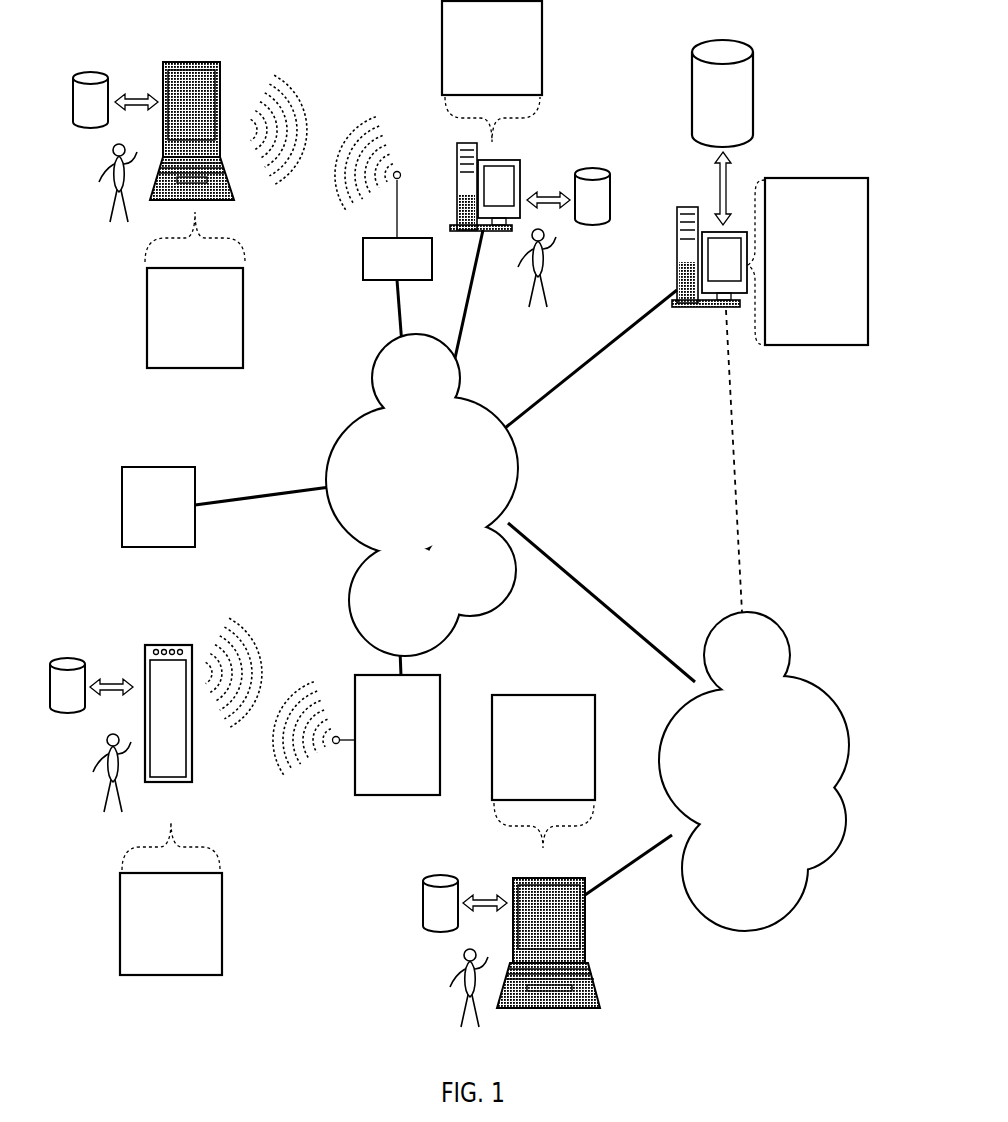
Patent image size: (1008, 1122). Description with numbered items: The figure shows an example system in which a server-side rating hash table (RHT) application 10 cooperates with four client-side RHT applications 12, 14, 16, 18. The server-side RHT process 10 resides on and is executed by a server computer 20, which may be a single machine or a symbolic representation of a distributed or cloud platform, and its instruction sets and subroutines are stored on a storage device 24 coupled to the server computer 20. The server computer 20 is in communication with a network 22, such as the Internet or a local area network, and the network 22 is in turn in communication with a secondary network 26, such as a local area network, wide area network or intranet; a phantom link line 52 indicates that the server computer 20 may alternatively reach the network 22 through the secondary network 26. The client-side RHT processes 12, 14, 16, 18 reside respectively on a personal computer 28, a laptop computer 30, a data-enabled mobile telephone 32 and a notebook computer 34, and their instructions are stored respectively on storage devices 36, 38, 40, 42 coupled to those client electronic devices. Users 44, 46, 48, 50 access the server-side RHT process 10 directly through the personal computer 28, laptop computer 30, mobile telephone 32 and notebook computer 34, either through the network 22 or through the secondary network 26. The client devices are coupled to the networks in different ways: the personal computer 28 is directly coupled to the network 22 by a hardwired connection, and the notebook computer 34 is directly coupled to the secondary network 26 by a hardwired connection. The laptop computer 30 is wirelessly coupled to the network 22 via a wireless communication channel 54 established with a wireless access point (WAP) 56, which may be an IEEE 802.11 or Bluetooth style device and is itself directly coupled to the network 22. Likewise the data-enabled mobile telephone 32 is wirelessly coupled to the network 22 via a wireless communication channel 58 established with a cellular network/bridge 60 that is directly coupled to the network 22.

The server-side rating hash table (RHT) application 10 is at (868, 225).
The client-side RHT application 12 is at (542, 70).
The client-side RHT application 14 is at (243, 299).
The client-side RHT application 16 is at (222, 893).
The client-side RHT application 18 is at (595, 760).
The server computer 20 is at (675, 238).
The network 22 is at (422, 495).
The storage device 24 is at (752, 65).
The secondary network 26 is at (754, 771).
The personal computer 28 is at (520, 178).
The laptop computer 30 is at (222, 90).
The data-enabled mobile telephone 32 is at (194, 718).
The notebook computer 34 is at (585, 935).
The storage device 36 is at (568, 196).
The storage device 38 is at (115, 100).
The storage device 40 is at (91, 685).
The storage device 42 is at (465, 903).
The user 44 is at (552, 246).
The user 46 is at (96, 173).
The user 48 is at (96, 757).
The user 50 is at (447, 980).
The phantom link line 52 is at (732, 442).
The wireless communication channel 54 is at (325, 110).
The wireless access point (WAP) 56 is at (363, 258).
The wireless communication channel 58 is at (275, 672).
The cellular network/bridge 60 is at (440, 692).